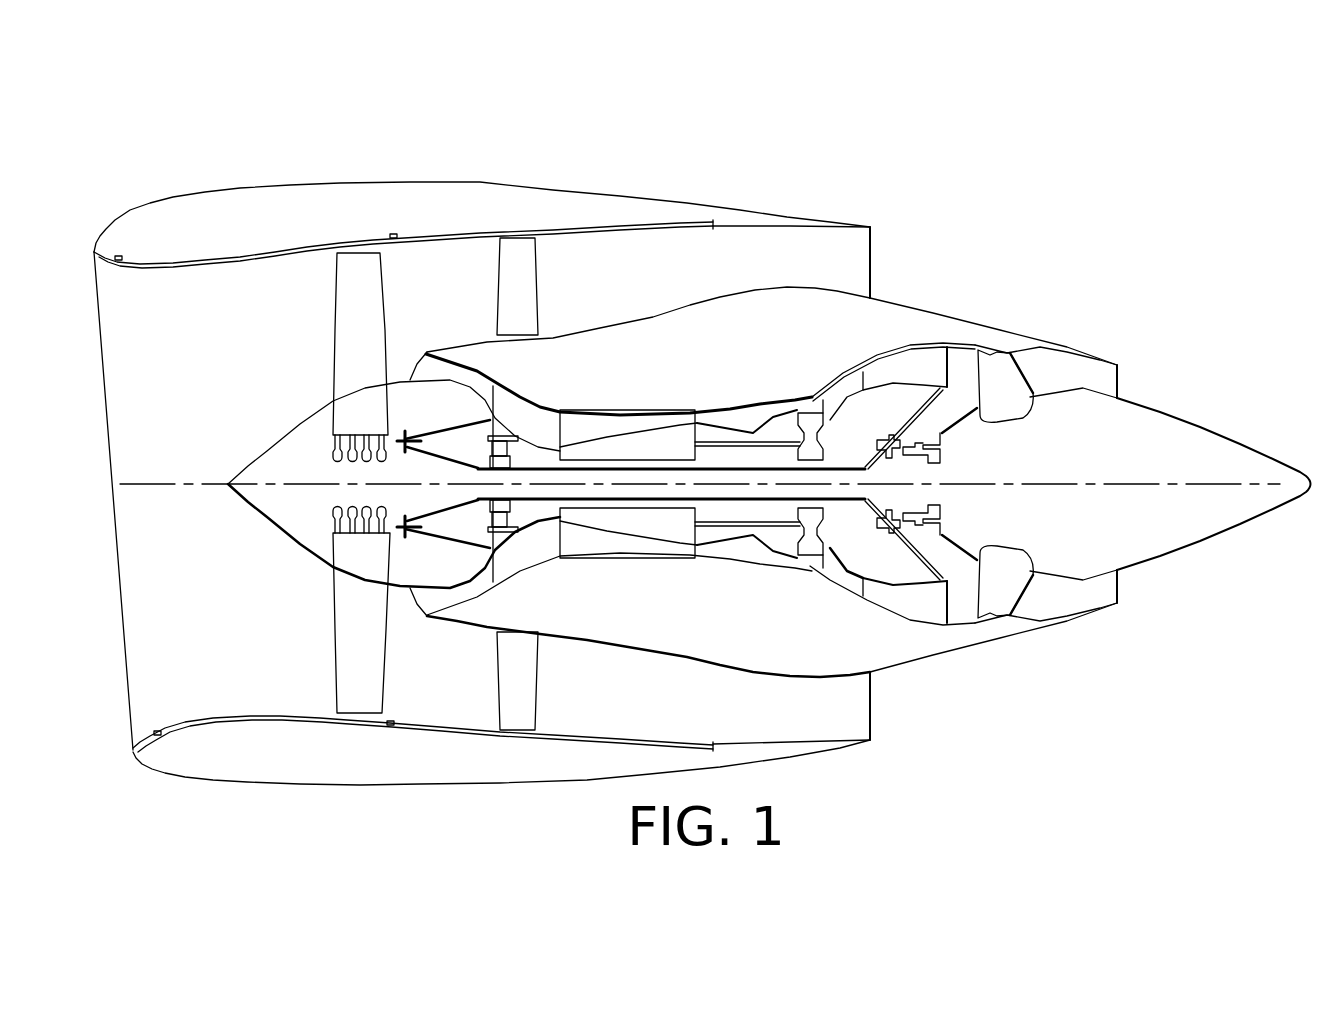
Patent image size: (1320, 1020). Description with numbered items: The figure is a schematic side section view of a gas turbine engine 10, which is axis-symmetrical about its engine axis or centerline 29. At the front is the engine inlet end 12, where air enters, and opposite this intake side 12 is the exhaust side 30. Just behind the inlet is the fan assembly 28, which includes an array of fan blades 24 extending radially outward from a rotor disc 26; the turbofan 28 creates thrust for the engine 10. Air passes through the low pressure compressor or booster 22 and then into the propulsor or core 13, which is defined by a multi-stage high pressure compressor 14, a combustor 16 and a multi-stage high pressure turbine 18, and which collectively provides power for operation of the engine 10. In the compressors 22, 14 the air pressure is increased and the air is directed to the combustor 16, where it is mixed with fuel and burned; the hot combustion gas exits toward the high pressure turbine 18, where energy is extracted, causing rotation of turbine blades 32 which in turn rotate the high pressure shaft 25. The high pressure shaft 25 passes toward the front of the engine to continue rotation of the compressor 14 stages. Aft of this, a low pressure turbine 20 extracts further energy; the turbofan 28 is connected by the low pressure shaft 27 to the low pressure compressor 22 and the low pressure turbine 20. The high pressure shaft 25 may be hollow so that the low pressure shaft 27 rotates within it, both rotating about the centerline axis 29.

The gas turbine engine 10 is at (806, 159).
The engine inlet end 12 is at (70, 258).
The propulsor or core 13 is at (675, 330).
The multi-stage high pressure compressor 14 is at (585, 406).
The combustor 16 is at (758, 405).
The multi-stage high pressure turbine 18 is at (827, 582).
The low pressure turbine 20 is at (881, 351).
The low pressure compressor or booster 22 is at (479, 356).
The fan blades 24 is at (342, 313).
The high pressure shaft 25 is at (720, 530).
The rotor disc 26 is at (357, 567).
The low pressure shaft 27 is at (910, 553).
The fan assembly 28 is at (358, 659).
The engine axis 29 is at (1120, 484).
The exhaust side 30 is at (924, 252).
The turbine blades 32 is at (841, 509).